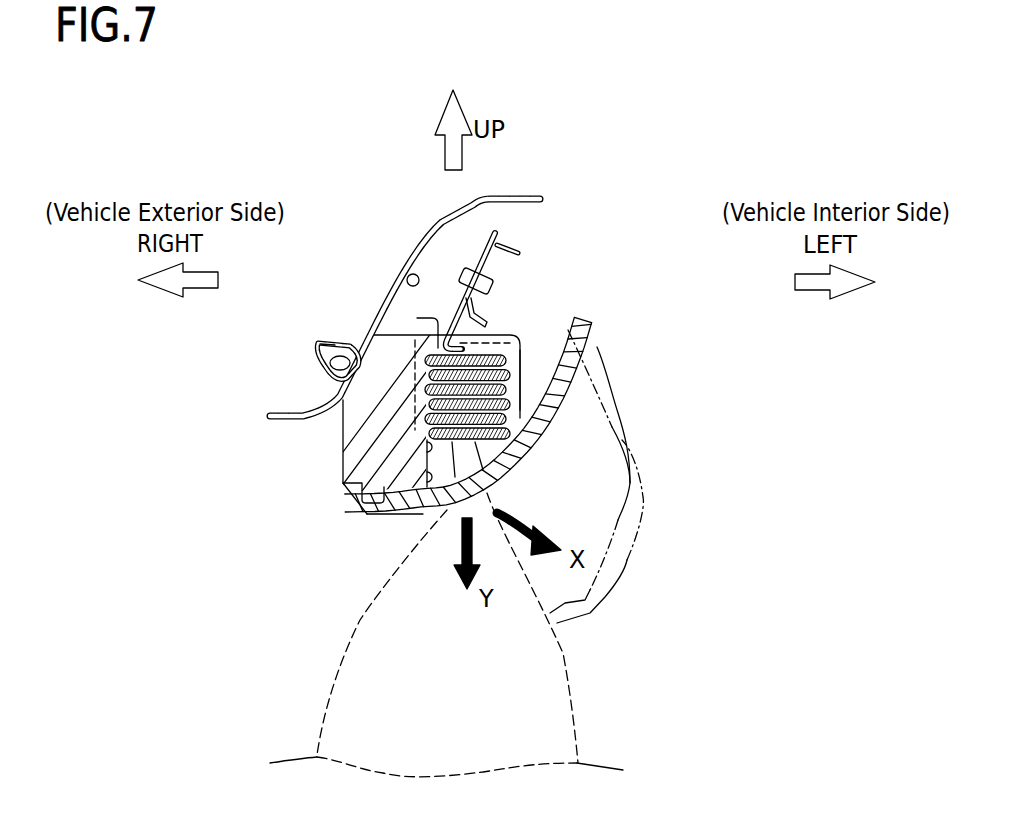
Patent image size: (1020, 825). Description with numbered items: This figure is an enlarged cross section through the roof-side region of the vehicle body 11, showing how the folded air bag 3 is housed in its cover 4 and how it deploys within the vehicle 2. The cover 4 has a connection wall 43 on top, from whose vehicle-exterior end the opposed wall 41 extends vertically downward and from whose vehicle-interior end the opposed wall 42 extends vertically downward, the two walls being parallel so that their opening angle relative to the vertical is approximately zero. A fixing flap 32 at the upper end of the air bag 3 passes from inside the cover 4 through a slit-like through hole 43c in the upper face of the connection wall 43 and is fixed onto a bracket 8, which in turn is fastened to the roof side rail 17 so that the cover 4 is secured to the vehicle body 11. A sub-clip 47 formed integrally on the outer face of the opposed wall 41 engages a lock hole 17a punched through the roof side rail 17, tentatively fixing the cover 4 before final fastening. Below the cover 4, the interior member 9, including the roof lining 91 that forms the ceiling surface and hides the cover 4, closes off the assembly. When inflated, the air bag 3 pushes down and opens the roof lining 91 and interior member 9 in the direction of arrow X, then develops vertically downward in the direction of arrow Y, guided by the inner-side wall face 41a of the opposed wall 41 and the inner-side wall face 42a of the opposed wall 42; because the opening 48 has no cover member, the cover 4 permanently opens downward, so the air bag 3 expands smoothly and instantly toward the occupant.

The door trim 2 is at (580, 257).
The air bag 3 is at (492, 447).
The cover 4 is at (517, 336).
The bracket 8 is at (521, 250).
The interior member 9 is at (388, 519).
The vehicle body 11 is at (447, 232).
The roof side rail 17 is at (409, 279).
The lock hole 17a is at (325, 363).
The fixing flap 32 is at (497, 233).
The opposed wall on the vehicle exterior side 41 is at (427, 463).
The inner-side wall face 41a is at (427, 484).
The opposed wall on the vehicle interior side 42 is at (512, 384).
The inner-side wall face 42a is at (520, 362).
The connection wall 43 is at (493, 333).
The through hole 43c is at (428, 318).
The sub-clip 47 is at (318, 344).
The opening 48 is at (522, 417).
The roof lining 91 is at (368, 518).